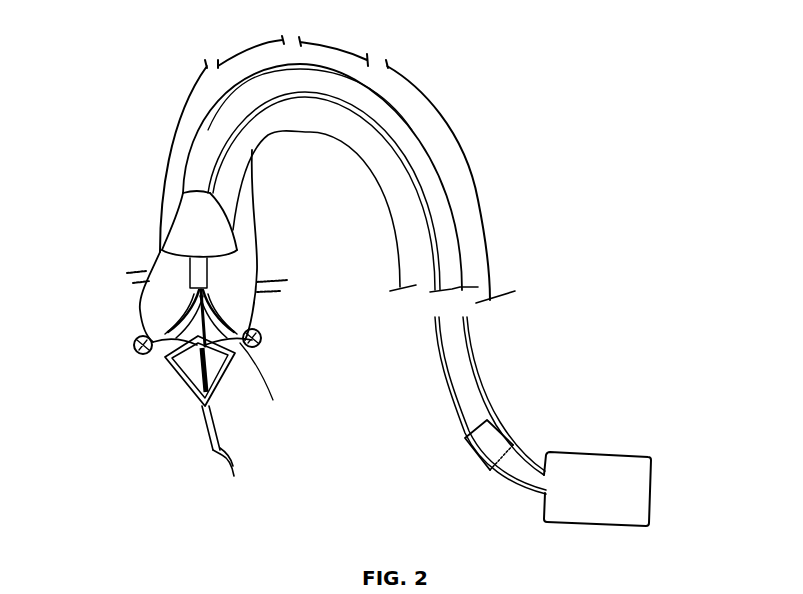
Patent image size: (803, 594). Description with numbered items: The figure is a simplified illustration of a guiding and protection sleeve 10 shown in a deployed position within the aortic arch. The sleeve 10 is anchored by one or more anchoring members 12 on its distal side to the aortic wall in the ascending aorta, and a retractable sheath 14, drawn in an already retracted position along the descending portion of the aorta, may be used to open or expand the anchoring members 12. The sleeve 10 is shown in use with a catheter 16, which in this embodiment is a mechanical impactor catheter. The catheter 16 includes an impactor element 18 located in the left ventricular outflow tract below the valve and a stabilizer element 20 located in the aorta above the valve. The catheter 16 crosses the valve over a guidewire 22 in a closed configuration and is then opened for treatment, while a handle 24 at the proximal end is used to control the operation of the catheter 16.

The guiding and protection sleeve 10 is at (179, 216).
The anchoring members 12 is at (165, 247).
The retractable sheath 14 is at (519, 424).
The catheter 16 is at (85, 308).
The impactor element 18 is at (171, 400).
The stabilizer element 20 is at (166, 314).
The guidewire 22 is at (211, 468).
The handle 24 is at (632, 483).